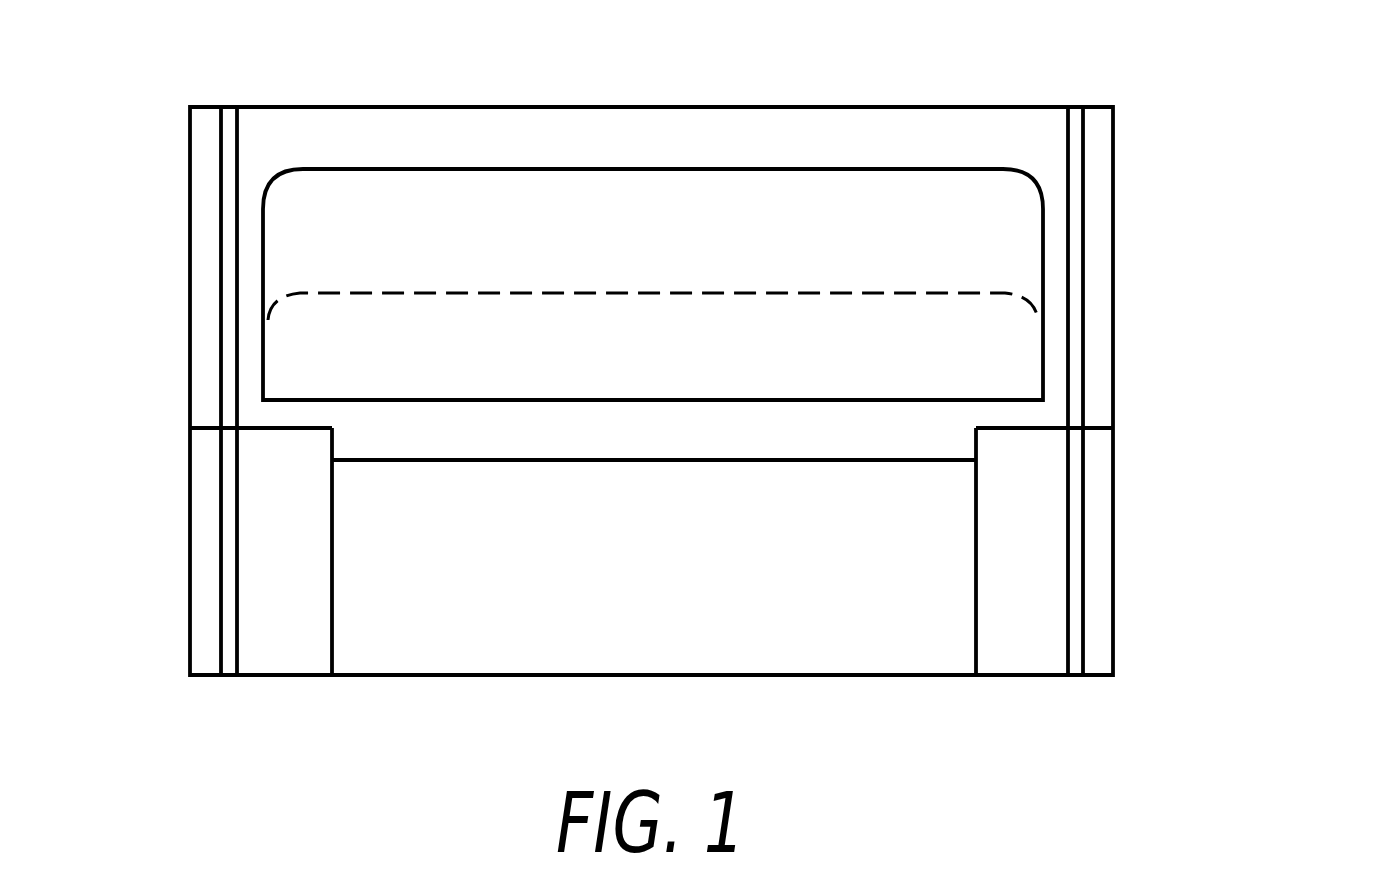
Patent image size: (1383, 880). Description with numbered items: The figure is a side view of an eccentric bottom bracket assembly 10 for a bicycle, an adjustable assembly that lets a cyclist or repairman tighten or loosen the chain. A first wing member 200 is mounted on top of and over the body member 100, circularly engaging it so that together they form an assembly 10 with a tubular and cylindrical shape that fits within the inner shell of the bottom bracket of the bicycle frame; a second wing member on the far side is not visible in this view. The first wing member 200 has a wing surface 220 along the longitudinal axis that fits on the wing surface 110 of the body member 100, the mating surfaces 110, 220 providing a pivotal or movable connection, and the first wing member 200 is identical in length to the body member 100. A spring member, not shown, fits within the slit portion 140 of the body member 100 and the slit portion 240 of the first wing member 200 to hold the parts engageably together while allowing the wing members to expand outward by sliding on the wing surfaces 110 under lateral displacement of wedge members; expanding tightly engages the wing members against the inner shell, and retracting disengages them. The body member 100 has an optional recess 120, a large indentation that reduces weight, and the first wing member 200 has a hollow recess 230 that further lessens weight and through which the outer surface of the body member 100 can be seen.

The eccentric bottom bracket assembly 10 is at (1238, 712).
The body member 100 is at (936, 650).
The wing surface of the body member 110 is at (286, 430).
The recess 120 is at (562, 612).
The slit portion of the body member 140 is at (228, 620).
The first wing member 200 is at (937, 133).
The wing surface of the first wing member 220 is at (257, 428).
The recess of the first wing member 230 is at (716, 318).
The slit portion of the wing member 240 is at (228, 160).